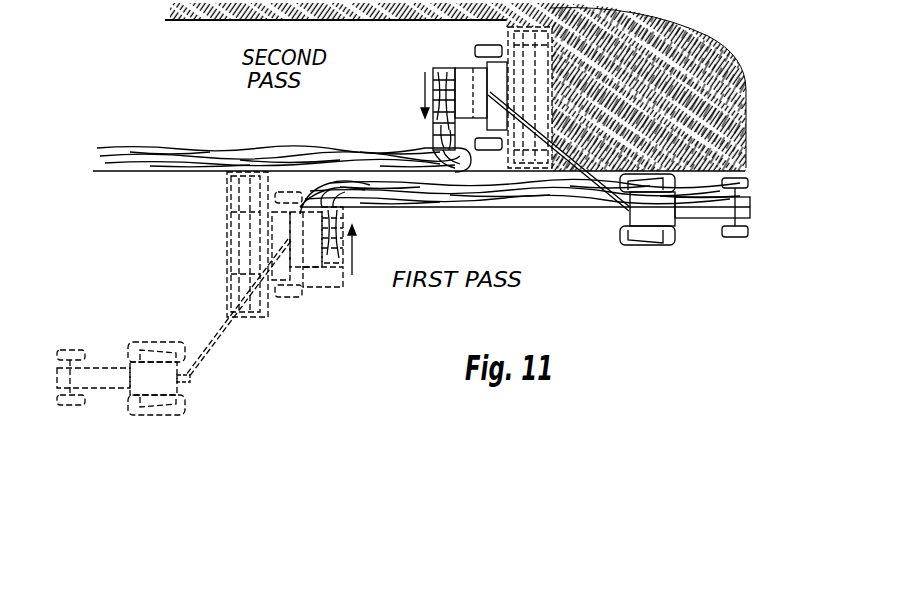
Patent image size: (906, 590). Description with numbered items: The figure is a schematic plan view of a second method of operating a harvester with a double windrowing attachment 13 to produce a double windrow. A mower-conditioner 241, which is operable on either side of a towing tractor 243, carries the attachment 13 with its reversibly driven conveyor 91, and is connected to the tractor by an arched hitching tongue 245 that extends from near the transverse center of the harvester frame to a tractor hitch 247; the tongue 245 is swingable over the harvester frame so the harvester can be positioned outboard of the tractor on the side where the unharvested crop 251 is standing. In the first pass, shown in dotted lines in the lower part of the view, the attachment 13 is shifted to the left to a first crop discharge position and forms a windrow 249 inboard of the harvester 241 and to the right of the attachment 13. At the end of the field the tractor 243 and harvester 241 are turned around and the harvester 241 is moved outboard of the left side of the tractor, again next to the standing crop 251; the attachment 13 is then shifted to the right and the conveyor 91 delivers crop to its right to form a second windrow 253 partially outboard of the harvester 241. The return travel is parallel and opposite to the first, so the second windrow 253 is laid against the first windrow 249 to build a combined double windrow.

The double windrowing attachment 13 is at (413, 65).
The reversibly driven conveyor 91 is at (418, 74).
The mower-conditioner 241 is at (556, 79).
The towing tractor 243 is at (700, 230).
The arched hitching tongue 245 is at (225, 342).
The tractor hitch 247 is at (190, 380).
The windrow 249 is at (414, 210).
The unharvested crop 251 is at (669, 113).
The second windrow 253 is at (207, 148).